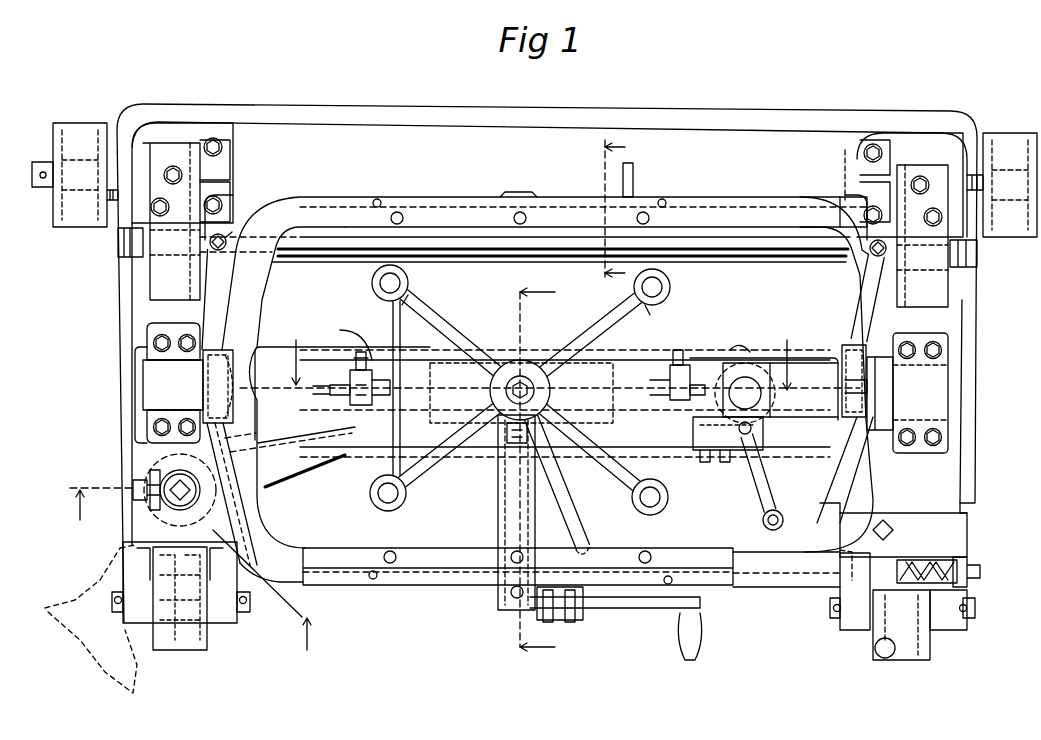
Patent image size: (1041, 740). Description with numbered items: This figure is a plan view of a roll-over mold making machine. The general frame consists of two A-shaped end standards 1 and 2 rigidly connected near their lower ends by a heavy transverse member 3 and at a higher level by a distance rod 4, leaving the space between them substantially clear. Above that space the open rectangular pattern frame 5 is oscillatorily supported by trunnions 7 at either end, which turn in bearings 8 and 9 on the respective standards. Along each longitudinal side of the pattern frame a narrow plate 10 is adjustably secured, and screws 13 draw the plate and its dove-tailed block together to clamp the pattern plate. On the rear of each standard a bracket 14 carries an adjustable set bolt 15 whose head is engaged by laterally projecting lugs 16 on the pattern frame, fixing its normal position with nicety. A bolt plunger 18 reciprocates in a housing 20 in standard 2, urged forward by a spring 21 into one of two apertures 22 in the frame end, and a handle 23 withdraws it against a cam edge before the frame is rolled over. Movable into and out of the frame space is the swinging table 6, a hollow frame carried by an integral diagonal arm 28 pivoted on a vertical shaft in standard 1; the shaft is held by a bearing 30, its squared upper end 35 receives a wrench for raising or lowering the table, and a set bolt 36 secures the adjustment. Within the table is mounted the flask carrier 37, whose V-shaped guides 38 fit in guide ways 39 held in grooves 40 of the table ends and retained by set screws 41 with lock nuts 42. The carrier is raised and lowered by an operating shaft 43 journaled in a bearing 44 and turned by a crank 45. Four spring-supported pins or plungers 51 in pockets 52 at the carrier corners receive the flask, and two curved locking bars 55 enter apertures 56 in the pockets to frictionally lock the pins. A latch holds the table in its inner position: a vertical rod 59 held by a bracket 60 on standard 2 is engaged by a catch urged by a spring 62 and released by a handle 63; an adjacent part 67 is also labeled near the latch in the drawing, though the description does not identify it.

The standard 1 is at (150, 283).
The standard 2 is at (948, 300).
The transverse member 3 is at (450, 109).
The distance rod 4 is at (190, 566).
The pattern frame 5 is at (296, 386).
The swinging table 6 is at (458, 492).
The trunnions 7 is at (102, 428).
The bearing 8 is at (169, 383).
The bearing 9 is at (896, 393).
The plate 10 is at (433, 200).
The screws 13 is at (666, 203).
The bracket 14 is at (226, 252).
The set bolt 15 is at (228, 234).
The lugs 16 is at (218, 252).
The bolt plunger 18 is at (968, 572).
The housing 20 is at (893, 566).
The spring 21 is at (966, 612).
The apertures 22 is at (845, 190).
The handle 23 is at (895, 645).
The arm 28 is at (282, 482).
The bearing 30 is at (165, 512).
The upper end of shaft 35 is at (158, 478).
The set bolt 36 is at (140, 498).
The flask carrier 37 is at (577, 495).
The V-shaped guides 38 is at (362, 450).
The guide ways 39 is at (352, 380).
The slots or grooves 40 is at (296, 350).
The set screws 41 is at (360, 350).
The lock nuts 42 is at (404, 340).
The operating shaft 43 is at (500, 522).
The bearing 44 is at (497, 541).
The crank 45 is at (650, 608).
The pins or plungers 51 is at (373, 279).
The pockets 52 is at (406, 286).
The locking bars 55 is at (440, 355).
The apertures 56 is at (432, 277).
The rod 59 is at (760, 405).
The bracket 60 is at (817, 417).
The spring 62 is at (725, 462).
The handle 63 is at (763, 519).
The bracket 67 is at (748, 390).